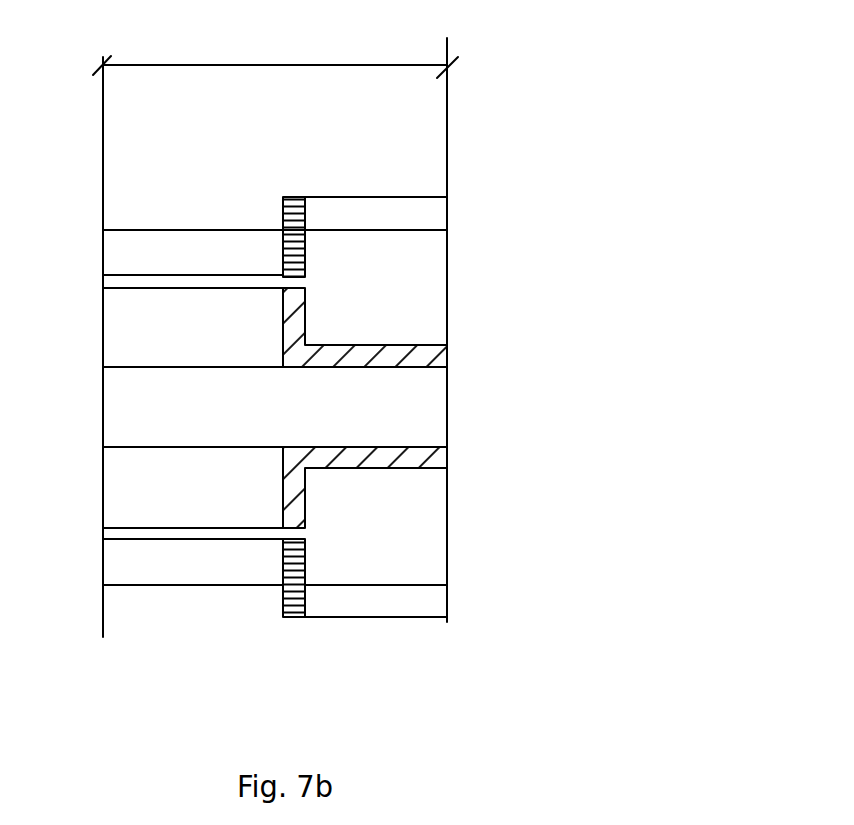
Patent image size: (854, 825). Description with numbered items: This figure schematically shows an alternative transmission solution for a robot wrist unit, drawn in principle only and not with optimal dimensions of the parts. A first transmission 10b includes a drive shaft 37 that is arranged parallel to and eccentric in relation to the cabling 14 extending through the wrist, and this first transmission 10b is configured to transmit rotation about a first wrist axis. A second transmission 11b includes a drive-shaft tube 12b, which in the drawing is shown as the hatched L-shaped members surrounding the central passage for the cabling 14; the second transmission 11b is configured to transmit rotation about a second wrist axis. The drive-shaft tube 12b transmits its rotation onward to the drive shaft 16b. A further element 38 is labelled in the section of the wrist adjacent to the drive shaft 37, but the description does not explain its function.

The first transmission 10b is at (245, 183).
The drive shaft 37 is at (433, 212).
The upper channel wall 38 is at (113, 238).
The drive-shaft tube 12b is at (382, 458).
The cabling 14 is at (435, 418).
The drive shaft 16b is at (207, 572).
The second transmission 11b is at (295, 633).